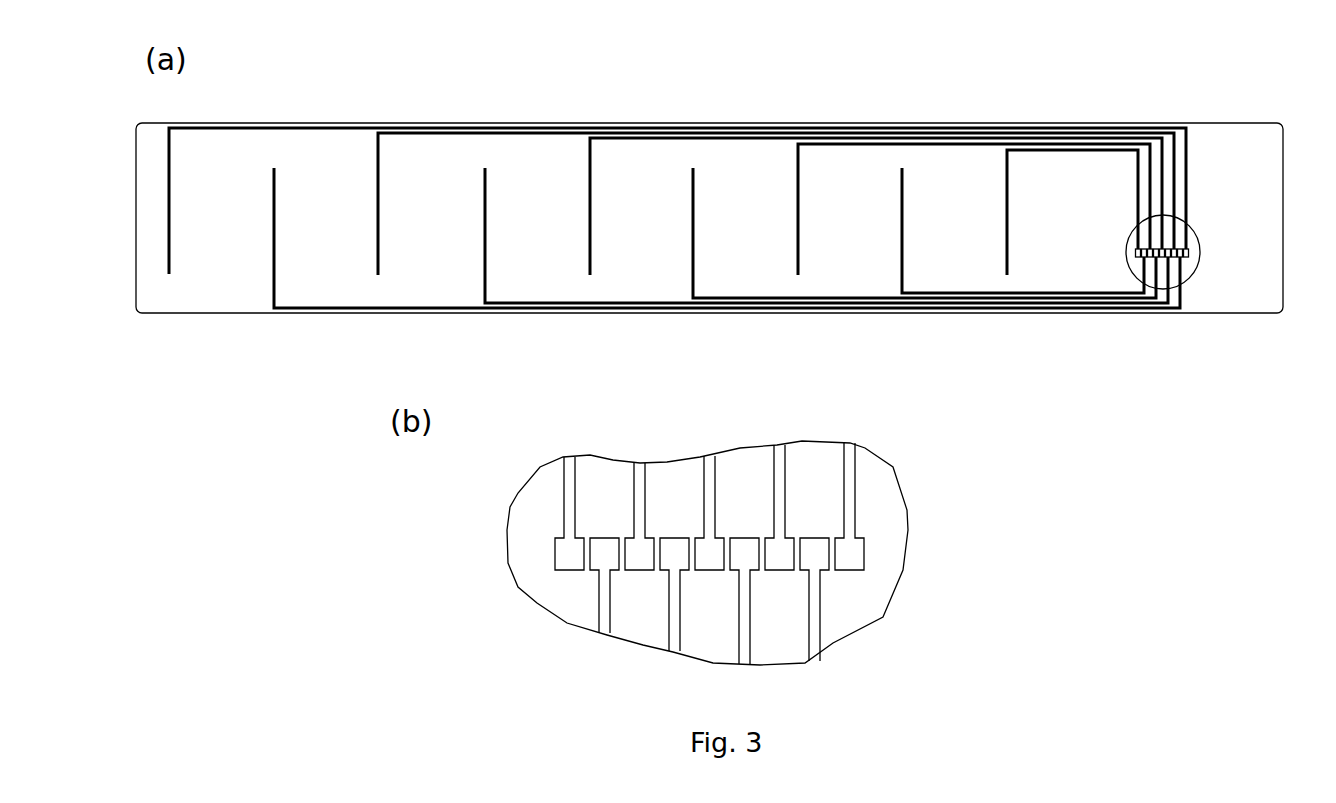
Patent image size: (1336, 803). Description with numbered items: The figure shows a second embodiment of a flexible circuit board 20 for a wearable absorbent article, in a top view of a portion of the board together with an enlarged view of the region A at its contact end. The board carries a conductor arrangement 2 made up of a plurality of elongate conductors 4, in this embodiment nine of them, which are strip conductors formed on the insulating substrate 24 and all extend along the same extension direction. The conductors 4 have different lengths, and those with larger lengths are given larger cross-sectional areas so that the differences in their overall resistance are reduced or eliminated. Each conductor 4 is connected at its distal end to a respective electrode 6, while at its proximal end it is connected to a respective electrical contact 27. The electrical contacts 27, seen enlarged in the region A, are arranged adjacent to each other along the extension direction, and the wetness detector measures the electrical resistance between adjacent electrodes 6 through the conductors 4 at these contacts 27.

In FIG. 3A, the conductor arrangement 2 is at (677, 200).
In FIG. 3A, the conductors 4 is at (360, 125).
In FIG. 3A, the electrode 6 is at (275, 265).
In FIG. 3A, the flexible circuit board 20 is at (677, 199).
In FIG. 3A, the insulating substrate 24 is at (1240, 142).
In FIG. 3A, the electrical contacts 27 is at (1145, 257).
In FIG. 3B, the electrical contacts 27 is at (850, 553).
In FIG. 3A, the region A is at (1172, 286).
In FIG. 3B, the region A is at (507, 552).